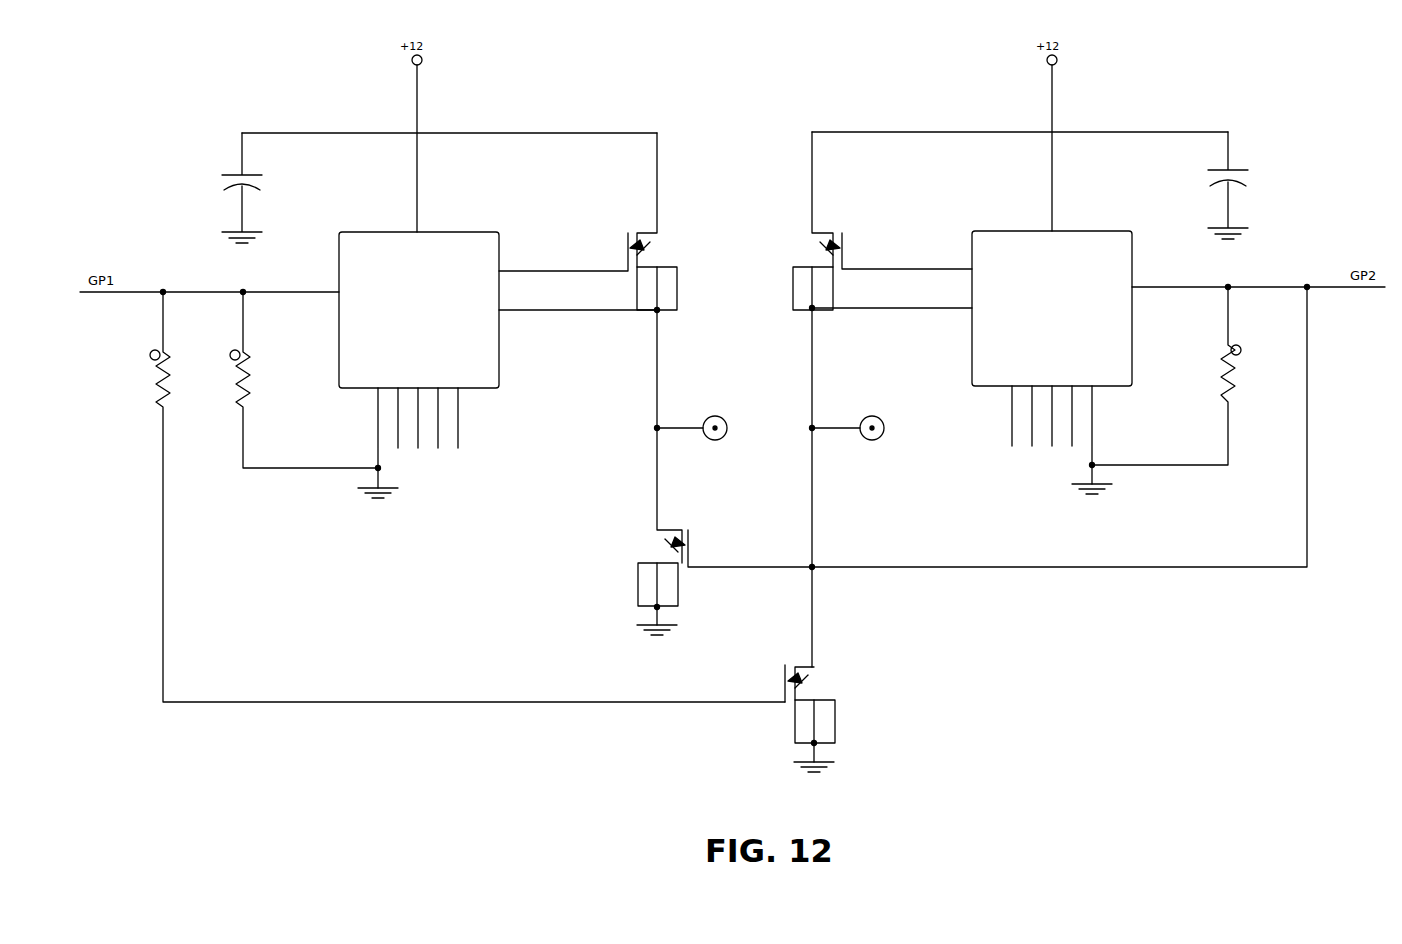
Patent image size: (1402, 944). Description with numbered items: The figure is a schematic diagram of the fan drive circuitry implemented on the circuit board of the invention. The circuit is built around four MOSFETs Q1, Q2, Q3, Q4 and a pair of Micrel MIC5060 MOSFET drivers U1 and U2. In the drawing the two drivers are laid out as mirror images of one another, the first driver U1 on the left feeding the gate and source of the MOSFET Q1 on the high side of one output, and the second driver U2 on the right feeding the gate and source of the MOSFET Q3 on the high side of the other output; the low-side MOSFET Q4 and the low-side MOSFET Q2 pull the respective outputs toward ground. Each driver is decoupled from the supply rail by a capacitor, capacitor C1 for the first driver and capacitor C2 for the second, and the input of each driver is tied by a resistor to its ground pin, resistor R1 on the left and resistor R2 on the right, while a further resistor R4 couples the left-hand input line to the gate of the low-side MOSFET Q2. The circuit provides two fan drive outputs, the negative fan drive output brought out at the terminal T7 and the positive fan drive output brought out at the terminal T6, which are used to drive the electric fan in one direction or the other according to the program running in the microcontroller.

The MOSFET driver U1 is at (427, 346).
The MOSFET driver U2 is at (1035, 344).
The MOSFET Q1 is at (588, 280).
The MOSFET Q2 is at (793, 710).
The MOSFET Q3 is at (881, 280).
The MOSFET Q4 is at (963, 477).
The resistor 10K R1 is at (304, 380).
The resistor 10K R2 is at (1166, 376).
The resistor 1K R4 is at (467, 497).
The capacitor 10uF C1 is at (212, 188).
The capacitor 10uF C2 is at (1248, 185).
The fan drive terminal FAN_DRV+ T6 is at (849, 424).
The fan drive terminal FAN_DRV- T7 is at (691, 428).